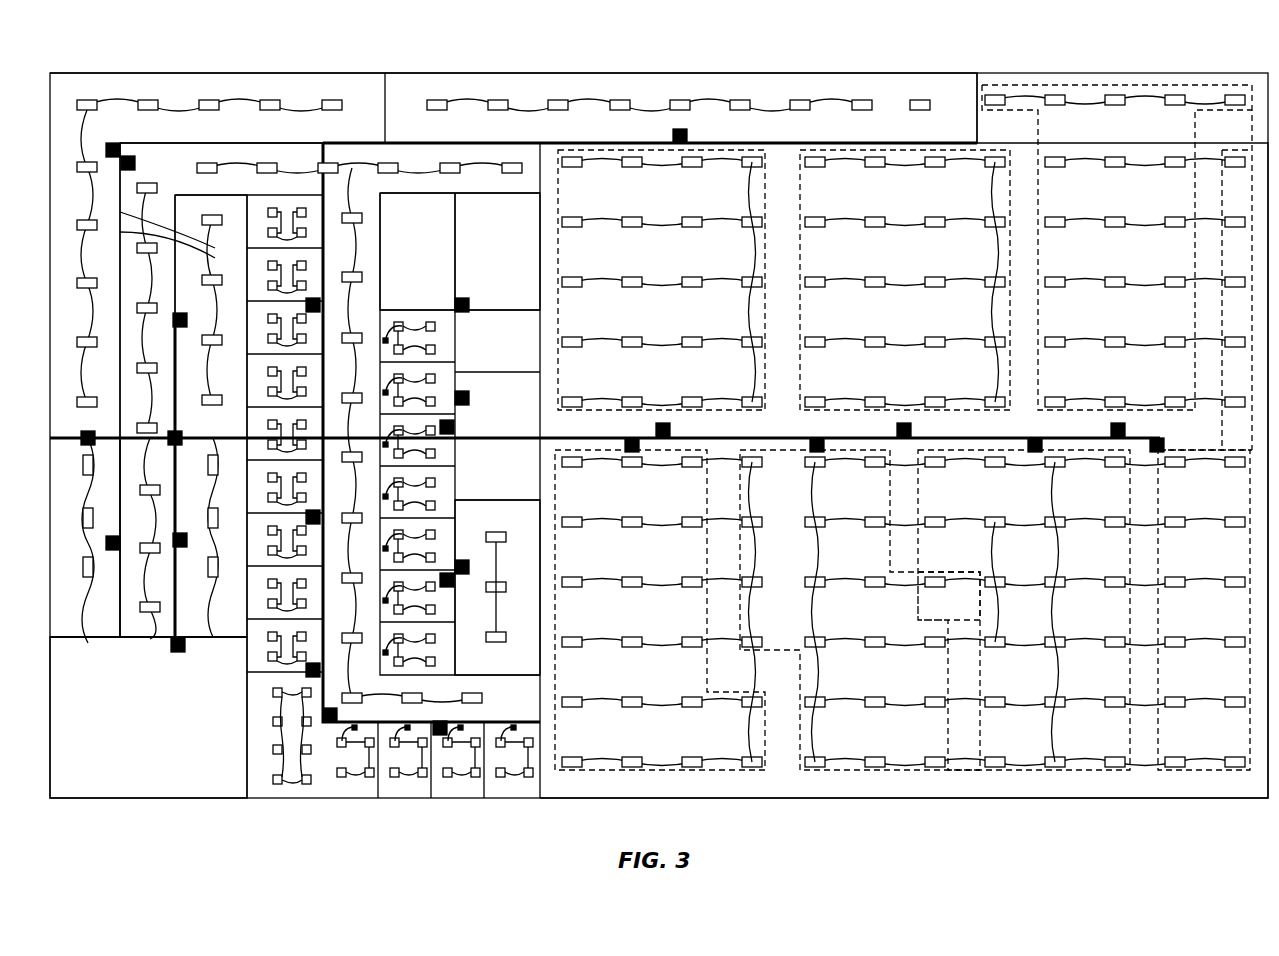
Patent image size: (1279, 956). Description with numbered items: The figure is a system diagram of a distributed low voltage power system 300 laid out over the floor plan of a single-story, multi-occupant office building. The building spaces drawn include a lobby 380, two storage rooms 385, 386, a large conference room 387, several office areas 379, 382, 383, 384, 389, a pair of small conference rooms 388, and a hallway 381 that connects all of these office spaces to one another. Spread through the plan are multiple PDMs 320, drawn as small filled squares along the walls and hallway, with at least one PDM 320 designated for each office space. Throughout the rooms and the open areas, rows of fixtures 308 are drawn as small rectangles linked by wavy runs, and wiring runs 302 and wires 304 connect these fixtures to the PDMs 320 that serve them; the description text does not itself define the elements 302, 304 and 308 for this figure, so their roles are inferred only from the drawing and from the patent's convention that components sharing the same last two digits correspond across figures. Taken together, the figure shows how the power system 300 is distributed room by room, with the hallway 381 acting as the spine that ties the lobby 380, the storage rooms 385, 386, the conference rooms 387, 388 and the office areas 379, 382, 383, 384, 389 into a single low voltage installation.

The distributed low voltage power system 300 is at (151, 22).
The zigzag wiring run 302 is at (120, 347).
The wiring 304 is at (147, 250).
The luminaire 308 is at (437, 100).
The PDM 320 is at (132, 162).
The office area 379 is at (229, 204).
The lobby 380 is at (162, 788).
The hallway 381 is at (135, 512).
The office area 382 is at (108, 632).
The office area 383 is at (118, 80).
The office area 384 is at (368, 790).
The storage room 385 is at (959, 98).
The storage room 386 is at (497, 587).
The large conference room 387 is at (1120, 782).
The small conference room 388 is at (460, 251).
The office area 389 is at (210, 625).